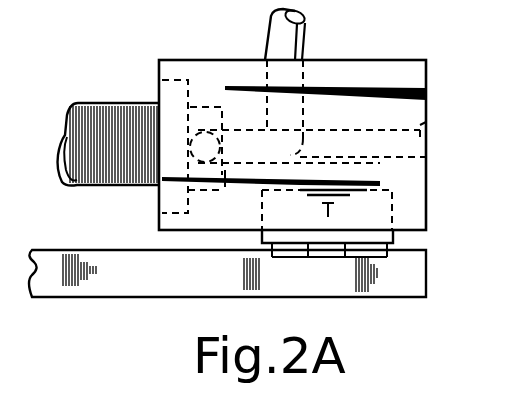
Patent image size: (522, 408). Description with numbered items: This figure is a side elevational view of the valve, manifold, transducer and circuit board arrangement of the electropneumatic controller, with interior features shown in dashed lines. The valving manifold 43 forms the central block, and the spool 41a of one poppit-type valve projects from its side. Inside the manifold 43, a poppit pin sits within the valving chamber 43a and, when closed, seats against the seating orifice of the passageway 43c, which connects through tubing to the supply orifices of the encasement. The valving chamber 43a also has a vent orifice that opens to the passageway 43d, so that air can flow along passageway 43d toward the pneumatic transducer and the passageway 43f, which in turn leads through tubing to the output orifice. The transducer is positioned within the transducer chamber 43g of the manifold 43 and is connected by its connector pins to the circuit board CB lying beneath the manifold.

The valving manifold 43 is at (417, 62).
The valving chamber 43a is at (213, 100).
The passageway 43c is at (315, 82).
The passageway 43d is at (426, 157).
The passageway 43f is at (428, 121).
The transducer chamber 43g is at (258, 200).
The spool 41a is at (92, 189).
The circuit board CB is at (414, 296).